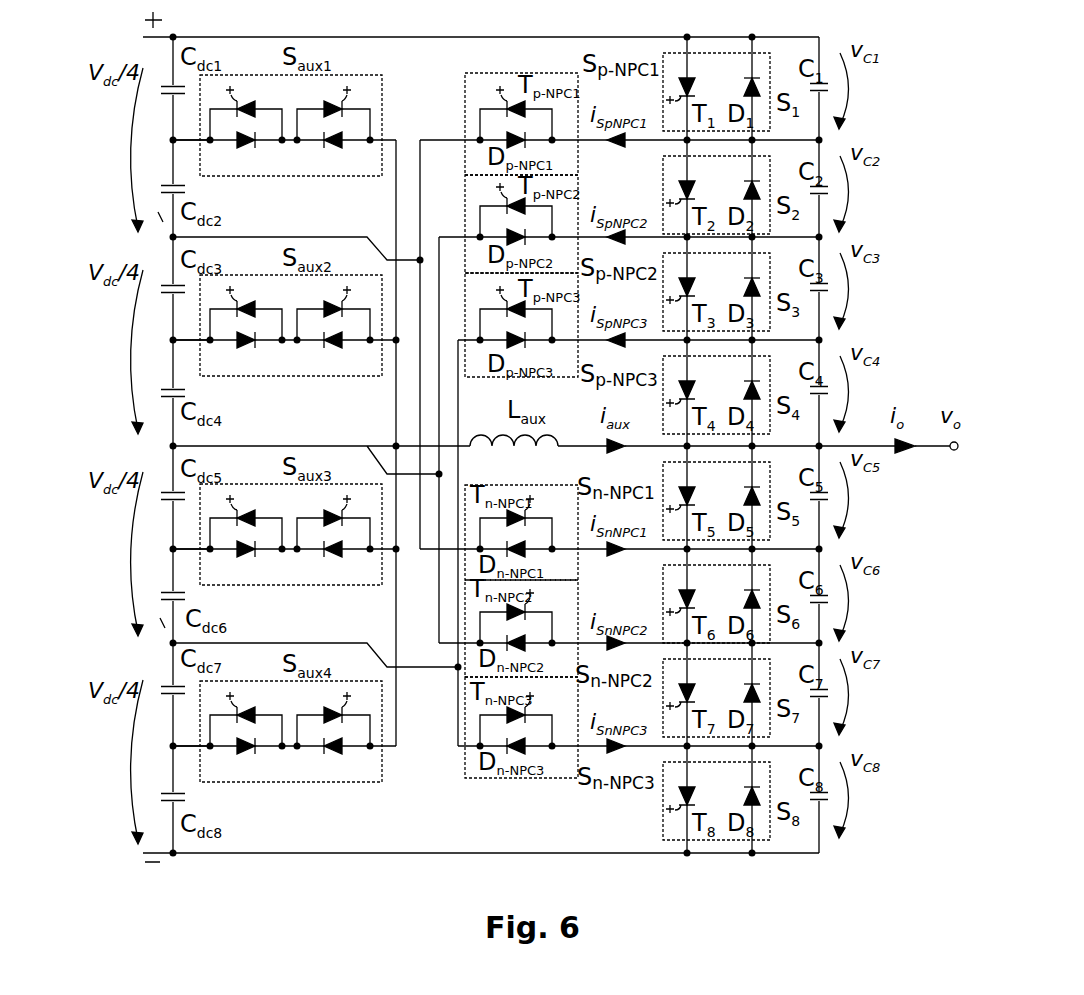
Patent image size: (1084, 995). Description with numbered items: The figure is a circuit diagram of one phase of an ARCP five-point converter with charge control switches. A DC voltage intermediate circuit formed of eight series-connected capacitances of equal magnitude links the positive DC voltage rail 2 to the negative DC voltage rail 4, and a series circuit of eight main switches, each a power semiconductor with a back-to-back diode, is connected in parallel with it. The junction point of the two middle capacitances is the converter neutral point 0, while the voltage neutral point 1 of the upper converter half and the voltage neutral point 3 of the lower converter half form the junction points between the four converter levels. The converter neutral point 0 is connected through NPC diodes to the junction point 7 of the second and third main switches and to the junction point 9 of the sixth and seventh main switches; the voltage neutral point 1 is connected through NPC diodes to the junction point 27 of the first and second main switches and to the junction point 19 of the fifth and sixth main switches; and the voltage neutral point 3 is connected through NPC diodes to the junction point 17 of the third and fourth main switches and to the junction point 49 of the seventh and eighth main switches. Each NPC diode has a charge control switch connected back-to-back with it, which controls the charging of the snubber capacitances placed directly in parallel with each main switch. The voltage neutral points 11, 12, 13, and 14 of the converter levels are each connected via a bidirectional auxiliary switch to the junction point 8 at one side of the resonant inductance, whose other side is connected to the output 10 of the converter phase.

The positive DC voltage rail 2 is at (493, 34).
The negative DC voltage rail 4 is at (472, 878).
The voltage neutral point 12 is at (148, 150).
The voltage neutral point of the upper converter half 1 is at (152, 247).
The voltage neutral point 11 is at (148, 350).
The converter neutral point 0 is at (150, 458).
The junction point 8 is at (392, 441).
The voltage neutral point 13 is at (146, 559).
The voltage neutral point of the lower converter half 3 is at (152, 653).
The voltage neutral point 14 is at (145, 756).
The junction point of the main switches S1 and S2 27 is at (796, 136).
The junction point of the main switches S2 and S3 7 is at (801, 229).
The junction point of the main switches S3 and S4 17 is at (796, 332).
The output of the converter phase 10 is at (892, 440).
The junction point of the main switches S5 and S6 19 is at (796, 540).
The junction point of the main switches S6 and S7 9 is at (801, 639).
The junction point of the main switches S7 and S8 49 is at (796, 735).